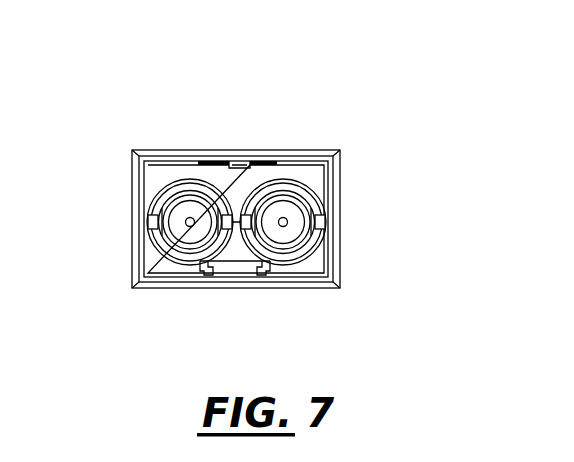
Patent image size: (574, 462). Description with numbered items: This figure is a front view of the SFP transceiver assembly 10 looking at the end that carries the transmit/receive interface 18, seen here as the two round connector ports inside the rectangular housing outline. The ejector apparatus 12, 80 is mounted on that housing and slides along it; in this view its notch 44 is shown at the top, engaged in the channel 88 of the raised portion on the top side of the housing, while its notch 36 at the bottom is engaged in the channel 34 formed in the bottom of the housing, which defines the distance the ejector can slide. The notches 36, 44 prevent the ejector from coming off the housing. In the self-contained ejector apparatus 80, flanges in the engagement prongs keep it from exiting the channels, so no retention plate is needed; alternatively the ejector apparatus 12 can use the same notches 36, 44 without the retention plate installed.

The SFP transceiver assembly 10 is at (354, 72).
The ejector apparatus 12 is at (297, 219).
The self-contained ejector apparatus 80 is at (415, 224).
The notch 44 is at (240, 163).
The channel 88 is at (232, 171).
The transmit/receive interface 18 is at (288, 222).
The channel 34 is at (246, 261).
The notch 36 is at (238, 272).